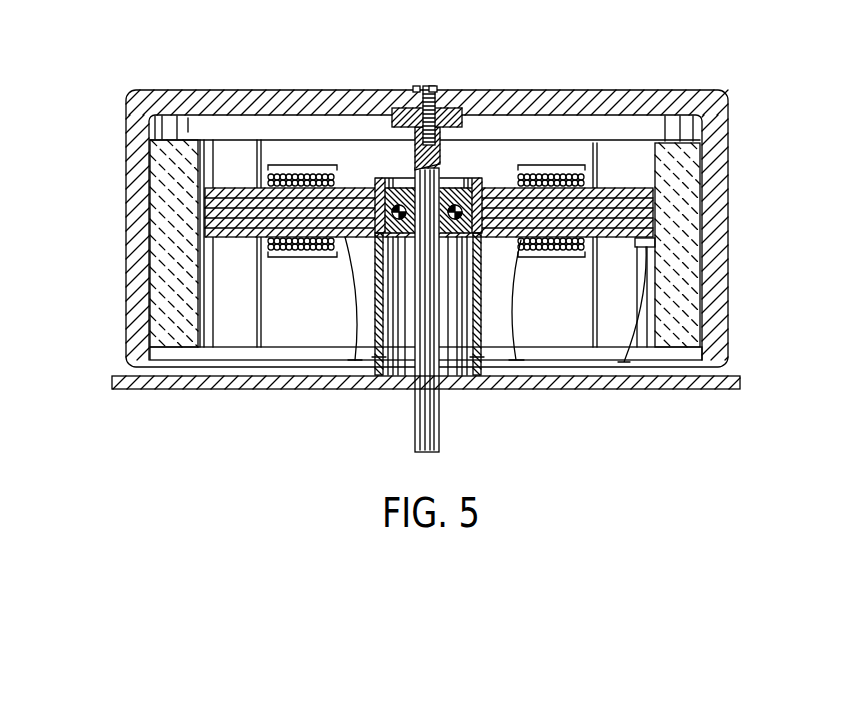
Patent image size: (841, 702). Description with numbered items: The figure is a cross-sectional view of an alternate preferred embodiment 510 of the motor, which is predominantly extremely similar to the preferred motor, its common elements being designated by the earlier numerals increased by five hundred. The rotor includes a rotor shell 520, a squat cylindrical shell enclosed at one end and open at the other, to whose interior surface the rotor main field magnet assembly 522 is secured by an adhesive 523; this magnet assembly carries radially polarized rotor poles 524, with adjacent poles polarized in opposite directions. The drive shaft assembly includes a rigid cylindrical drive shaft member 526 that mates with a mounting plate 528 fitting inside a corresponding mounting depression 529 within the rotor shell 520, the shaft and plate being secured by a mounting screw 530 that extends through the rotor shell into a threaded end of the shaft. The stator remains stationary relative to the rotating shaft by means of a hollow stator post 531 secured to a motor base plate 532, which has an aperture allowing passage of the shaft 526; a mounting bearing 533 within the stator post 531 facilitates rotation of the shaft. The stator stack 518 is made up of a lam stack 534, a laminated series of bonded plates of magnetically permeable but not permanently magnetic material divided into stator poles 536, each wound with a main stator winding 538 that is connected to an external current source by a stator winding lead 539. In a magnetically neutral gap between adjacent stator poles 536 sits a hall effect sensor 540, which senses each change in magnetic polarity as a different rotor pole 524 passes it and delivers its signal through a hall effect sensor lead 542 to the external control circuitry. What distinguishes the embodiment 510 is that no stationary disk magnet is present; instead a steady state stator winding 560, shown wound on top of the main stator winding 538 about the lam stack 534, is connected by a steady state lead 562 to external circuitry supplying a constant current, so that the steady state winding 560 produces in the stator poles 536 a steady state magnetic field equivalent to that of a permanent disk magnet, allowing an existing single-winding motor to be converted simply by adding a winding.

The alternate preferred embodiment 510 is at (570, 56).
The stator stack 518 is at (494, 282).
The rotor shell 520 is at (288, 88).
The rotor main field magnet assembly 522 is at (160, 225).
The adhesive 523 is at (150, 170).
The rotor poles 524 is at (243, 320).
The drive shaft member 526 is at (439, 431).
The mounting plate 528 is at (455, 108).
The mounting depression 529 is at (393, 108).
The mounting screw 530 is at (432, 88).
The stator post 531 is at (372, 357).
The motor base plate 532 is at (698, 392).
The mounting bearing 533 is at (356, 302).
The lam stack 534 is at (232, 200).
The stator poles 536 is at (232, 195).
The main stator winding 538 is at (338, 215).
The stator winding lead 539 is at (352, 333).
The hall effect sensor 540 is at (650, 242).
The hall effect sensor lead 542 is at (645, 283).
The steady state stator winding 560 is at (300, 163).
The steady state lead 562 is at (518, 338).